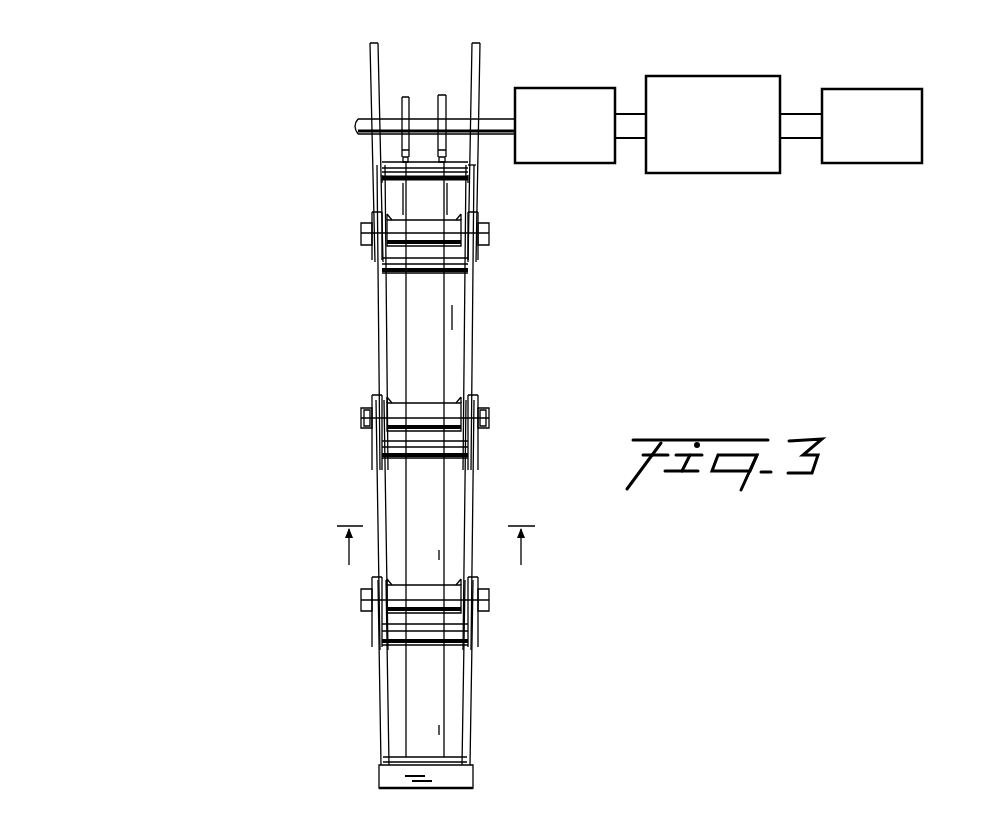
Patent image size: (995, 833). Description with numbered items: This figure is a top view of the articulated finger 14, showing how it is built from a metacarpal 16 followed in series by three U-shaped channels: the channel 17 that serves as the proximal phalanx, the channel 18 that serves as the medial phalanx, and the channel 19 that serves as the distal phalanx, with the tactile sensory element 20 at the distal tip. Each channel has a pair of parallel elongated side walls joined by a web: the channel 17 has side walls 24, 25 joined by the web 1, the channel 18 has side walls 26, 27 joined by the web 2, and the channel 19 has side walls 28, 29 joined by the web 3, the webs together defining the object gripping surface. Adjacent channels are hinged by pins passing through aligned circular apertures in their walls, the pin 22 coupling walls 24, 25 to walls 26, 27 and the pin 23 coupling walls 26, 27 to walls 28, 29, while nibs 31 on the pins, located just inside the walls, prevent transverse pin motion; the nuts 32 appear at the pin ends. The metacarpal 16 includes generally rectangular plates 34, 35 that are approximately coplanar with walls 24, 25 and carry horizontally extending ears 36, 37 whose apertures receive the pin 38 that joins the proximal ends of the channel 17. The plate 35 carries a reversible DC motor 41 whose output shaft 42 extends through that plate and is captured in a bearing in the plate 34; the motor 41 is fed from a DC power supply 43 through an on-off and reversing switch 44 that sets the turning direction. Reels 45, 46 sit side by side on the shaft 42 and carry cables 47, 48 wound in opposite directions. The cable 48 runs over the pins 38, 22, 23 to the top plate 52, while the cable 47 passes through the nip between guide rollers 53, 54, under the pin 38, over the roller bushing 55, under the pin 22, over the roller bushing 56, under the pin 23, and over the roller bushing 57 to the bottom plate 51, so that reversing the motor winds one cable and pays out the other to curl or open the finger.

The web 1 is at (432, 319).
The web 2 is at (462, 545).
The web 3 is at (455, 728).
The finger 14 is at (200, 440).
The metacarpal 16 is at (350, 79).
The U-shaped channel 17 is at (348, 311).
The U-shaped channel 18 is at (338, 467).
The U-shaped channel 19 is at (352, 693).
The tactile sensory element 20 is at (383, 780).
The pin 22 is at (366, 426).
The pin 23 is at (363, 600).
The side wall 24 is at (378, 345).
The side wall 25 is at (471, 341).
The side wall 26 is at (379, 548).
The side wall 27 is at (476, 508).
The side wall 28 is at (378, 722).
The side wall 29 is at (471, 695).
The nib 31 is at (388, 403).
The axle nuts 32 is at (362, 418).
The plate 34 is at (370, 52).
The plate 35 is at (480, 50).
The ear 36 is at (381, 178).
The ear 37 is at (470, 165).
The pin 38 is at (362, 234).
The reversible DC motor 41 is at (588, 94).
The output shaft 42 is at (357, 127).
The DC power supply 43 is at (880, 94).
The on-off and reversing switch 44 is at (728, 80).
The reel 45 is at (404, 97).
The reel 46 is at (445, 95).
The cable 47 is at (404, 206).
The cable 48 is at (447, 205).
The bottom plate 51 is at (383, 758).
The top plate 52 is at (462, 776).
The guide roller 53 is at (385, 165).
The guide roller 54 is at (460, 177).
The roller bushing 55 is at (462, 272).
The roller bushing 56 is at (468, 462).
The roller bushing 57 is at (463, 646).